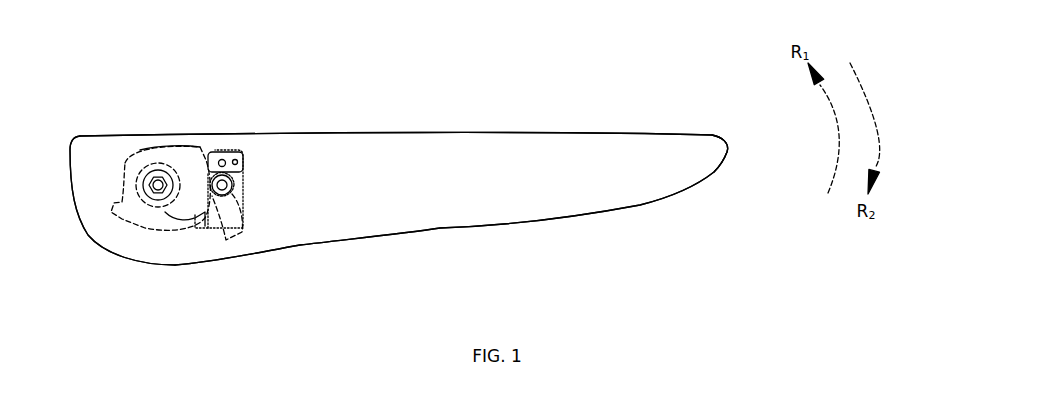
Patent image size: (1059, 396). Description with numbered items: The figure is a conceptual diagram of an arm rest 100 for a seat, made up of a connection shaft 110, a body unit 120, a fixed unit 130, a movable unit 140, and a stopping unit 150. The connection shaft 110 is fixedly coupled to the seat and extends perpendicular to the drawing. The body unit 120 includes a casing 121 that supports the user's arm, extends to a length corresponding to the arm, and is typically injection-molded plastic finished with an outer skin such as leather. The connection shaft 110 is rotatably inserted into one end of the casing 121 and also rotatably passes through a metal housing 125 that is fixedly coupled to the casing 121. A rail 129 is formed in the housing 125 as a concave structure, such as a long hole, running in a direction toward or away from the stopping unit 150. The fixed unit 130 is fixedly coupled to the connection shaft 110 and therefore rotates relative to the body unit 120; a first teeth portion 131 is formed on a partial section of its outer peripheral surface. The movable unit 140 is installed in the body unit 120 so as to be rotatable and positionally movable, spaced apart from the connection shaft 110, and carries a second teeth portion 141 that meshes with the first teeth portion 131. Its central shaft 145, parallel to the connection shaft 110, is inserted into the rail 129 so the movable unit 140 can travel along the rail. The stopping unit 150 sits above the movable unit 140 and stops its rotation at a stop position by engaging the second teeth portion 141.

The arm rest 100 is at (557, 57).
The connection shaft 110 is at (155, 190).
The body unit 120 is at (438, 212).
The casing 121 is at (727, 162).
The housing 125 is at (166, 148).
The rail 129 is at (230, 207).
The fixed unit 130 is at (180, 230).
The first teeth portion 131 is at (223, 225).
The movable unit 140 is at (248, 168).
The second teeth portion 141 is at (234, 188).
The central shaft 145 is at (248, 212).
The stopping unit 150 is at (230, 152).